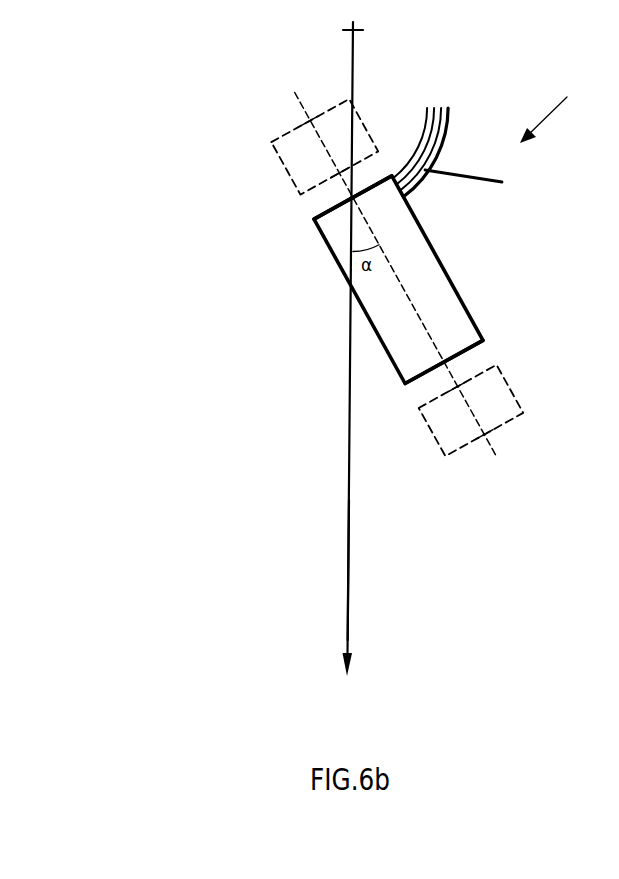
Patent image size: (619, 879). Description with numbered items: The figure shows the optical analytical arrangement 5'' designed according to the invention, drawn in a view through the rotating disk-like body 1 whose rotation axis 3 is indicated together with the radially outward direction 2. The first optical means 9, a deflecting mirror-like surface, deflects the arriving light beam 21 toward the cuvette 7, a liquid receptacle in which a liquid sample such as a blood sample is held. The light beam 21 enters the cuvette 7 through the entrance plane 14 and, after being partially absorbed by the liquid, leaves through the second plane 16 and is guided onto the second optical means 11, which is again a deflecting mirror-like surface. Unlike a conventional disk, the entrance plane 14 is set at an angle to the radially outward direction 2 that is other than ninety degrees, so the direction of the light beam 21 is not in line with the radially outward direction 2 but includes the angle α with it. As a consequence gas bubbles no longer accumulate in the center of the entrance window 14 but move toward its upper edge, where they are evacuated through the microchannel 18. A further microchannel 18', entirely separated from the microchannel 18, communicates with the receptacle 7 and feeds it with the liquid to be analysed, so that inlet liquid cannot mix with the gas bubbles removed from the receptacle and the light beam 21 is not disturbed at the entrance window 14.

The disk-like body 1 is at (486, 559).
The radially outward direction 2 is at (346, 565).
The rotation axis 3 is at (362, 347).
The arrangement 5'' is at (558, 109).
The cuvette 7 is at (436, 279).
The first optical means 9 is at (298, 162).
The second optical means 11 is at (506, 394).
The entrance plane 14 is at (349, 200).
The second plane 16 is at (482, 346).
The microchannel 18 is at (443, 152).
The further microchannel 18' is at (488, 184).
The light beam 21 is at (391, 263).